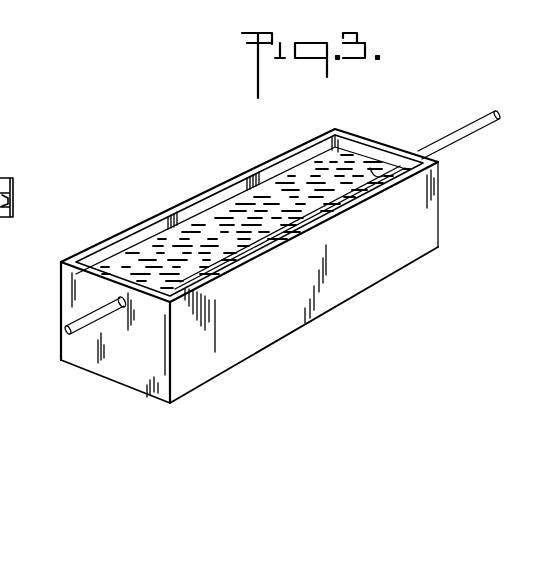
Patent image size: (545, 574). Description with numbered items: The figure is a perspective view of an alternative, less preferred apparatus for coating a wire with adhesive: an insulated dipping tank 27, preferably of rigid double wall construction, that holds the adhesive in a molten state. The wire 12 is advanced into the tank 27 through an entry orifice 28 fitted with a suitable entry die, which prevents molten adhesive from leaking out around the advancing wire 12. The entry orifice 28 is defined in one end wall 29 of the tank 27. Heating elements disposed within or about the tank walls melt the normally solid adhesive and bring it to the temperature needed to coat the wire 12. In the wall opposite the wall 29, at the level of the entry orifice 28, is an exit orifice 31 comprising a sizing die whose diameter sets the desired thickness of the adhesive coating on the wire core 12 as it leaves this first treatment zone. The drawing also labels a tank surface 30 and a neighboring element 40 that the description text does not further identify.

The wire 12 is at (73, 342).
The insulated dipping tank 27 is at (219, 180).
The entry orifice 28 is at (118, 322).
The wall 29 is at (68, 293).
The bottom wall 30 is at (263, 350).
The exit orifice 31 is at (372, 165).
The adjacent component 40 is at (1, 160).